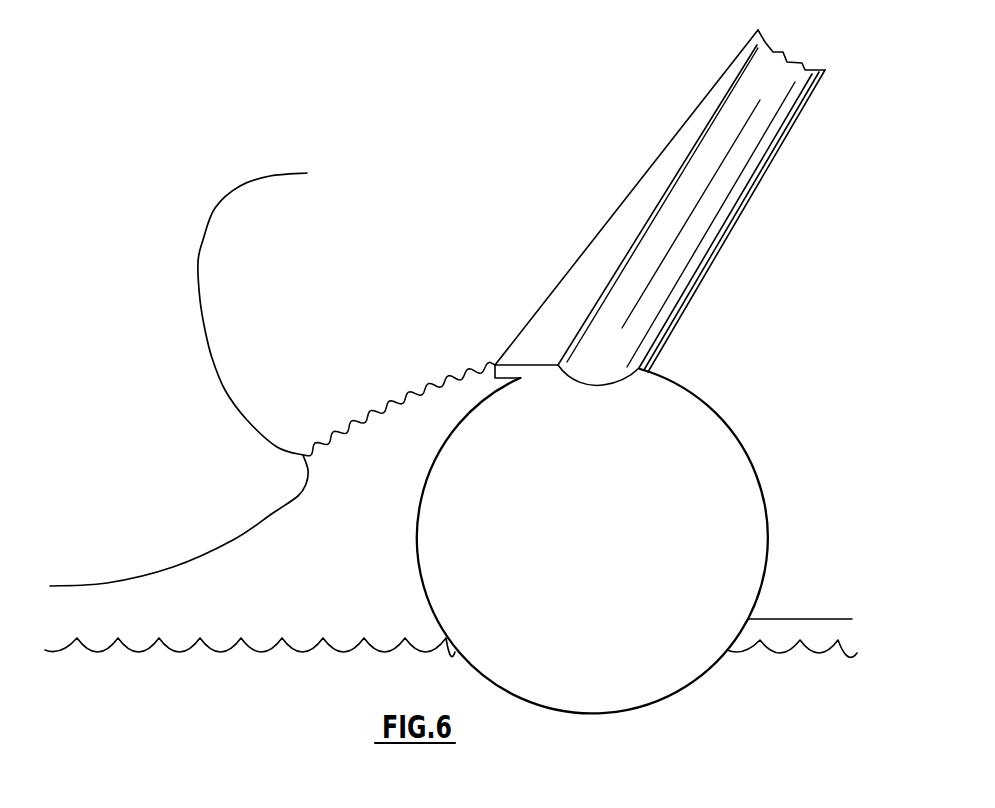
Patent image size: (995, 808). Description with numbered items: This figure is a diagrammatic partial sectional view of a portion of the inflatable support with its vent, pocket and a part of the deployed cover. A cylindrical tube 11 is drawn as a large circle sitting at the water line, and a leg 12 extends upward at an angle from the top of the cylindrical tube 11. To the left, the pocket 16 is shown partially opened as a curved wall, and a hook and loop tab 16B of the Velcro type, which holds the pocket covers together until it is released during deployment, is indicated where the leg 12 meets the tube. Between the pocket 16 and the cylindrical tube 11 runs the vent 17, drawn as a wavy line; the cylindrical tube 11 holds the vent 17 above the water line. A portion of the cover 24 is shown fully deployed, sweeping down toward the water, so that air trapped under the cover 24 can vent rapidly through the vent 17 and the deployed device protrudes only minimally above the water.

The cylindrical tube 11 is at (725, 422).
The leg 12 is at (723, 235).
The pocket 16 is at (203, 195).
The hook and loop tab 16B is at (540, 253).
The vent 17 is at (337, 392).
The cover 24 is at (233, 540).